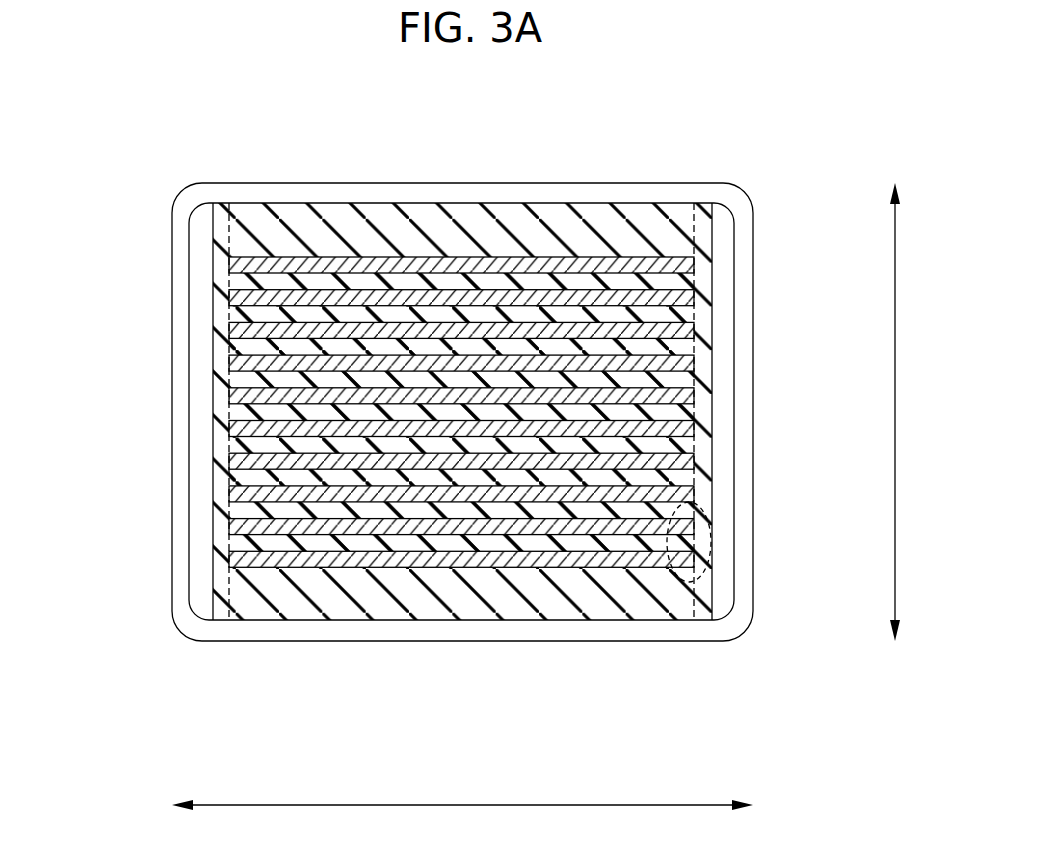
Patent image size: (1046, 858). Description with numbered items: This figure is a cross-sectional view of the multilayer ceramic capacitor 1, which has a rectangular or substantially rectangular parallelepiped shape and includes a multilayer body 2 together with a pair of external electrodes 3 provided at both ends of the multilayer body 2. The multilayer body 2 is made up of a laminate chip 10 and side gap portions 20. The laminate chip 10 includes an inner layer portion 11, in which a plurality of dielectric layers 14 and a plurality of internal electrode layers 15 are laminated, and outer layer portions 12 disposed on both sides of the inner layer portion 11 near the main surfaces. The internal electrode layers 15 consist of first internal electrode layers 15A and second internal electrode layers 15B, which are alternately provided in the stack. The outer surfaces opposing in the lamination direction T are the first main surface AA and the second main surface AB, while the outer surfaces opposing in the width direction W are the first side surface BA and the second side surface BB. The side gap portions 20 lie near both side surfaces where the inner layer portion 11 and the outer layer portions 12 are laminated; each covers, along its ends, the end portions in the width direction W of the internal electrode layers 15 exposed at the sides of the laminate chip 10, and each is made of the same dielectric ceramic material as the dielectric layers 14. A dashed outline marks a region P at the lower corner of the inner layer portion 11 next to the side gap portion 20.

The multilayer ceramic capacitor 1 is at (733, 137).
The multilayer body 2 is at (720, 697).
The external electrode 3 is at (733, 194).
The laminate chip 10 is at (623, 595).
The inner layer portion 11 is at (229, 256).
The outer layer portion 12 is at (510, 222).
The dielectric layer 14 is at (230, 319).
The internal electrode layer 15 is at (113, 263).
The first internal electrode layer 15A is at (230, 265).
The second internal electrode layer 15B is at (230, 296).
The side gap portion 20 is at (703, 612).
The region P is at (713, 540).
The first main surface AA is at (373, 203).
The second main surface AB is at (363, 620).
The first side surface BA is at (190, 595).
The second side surface BB is at (735, 593).
The lamination direction T is at (905, 412).
The width direction W is at (462, 819).